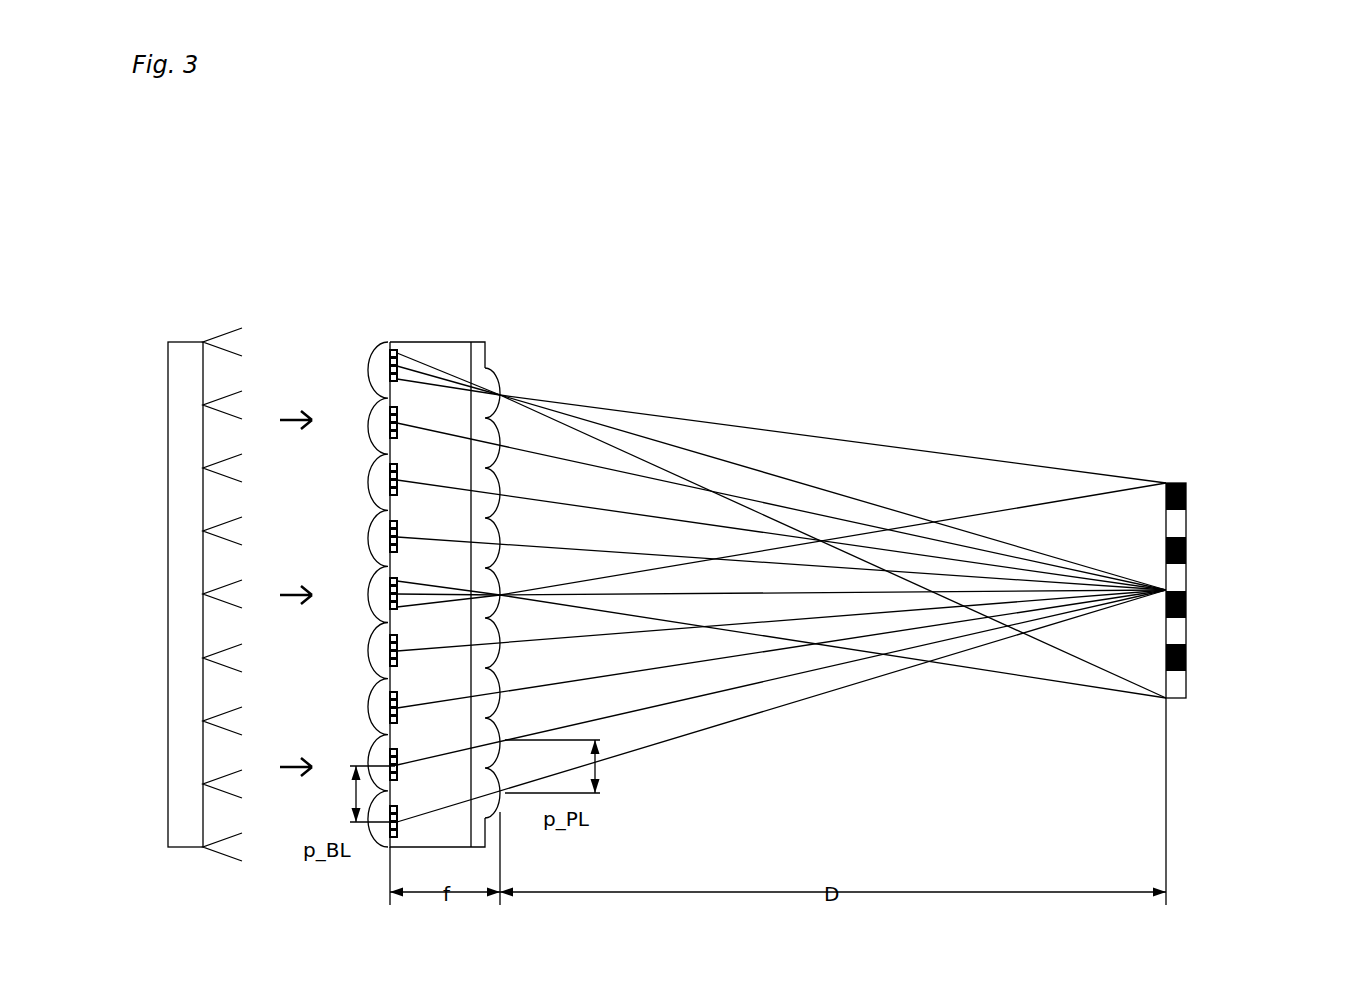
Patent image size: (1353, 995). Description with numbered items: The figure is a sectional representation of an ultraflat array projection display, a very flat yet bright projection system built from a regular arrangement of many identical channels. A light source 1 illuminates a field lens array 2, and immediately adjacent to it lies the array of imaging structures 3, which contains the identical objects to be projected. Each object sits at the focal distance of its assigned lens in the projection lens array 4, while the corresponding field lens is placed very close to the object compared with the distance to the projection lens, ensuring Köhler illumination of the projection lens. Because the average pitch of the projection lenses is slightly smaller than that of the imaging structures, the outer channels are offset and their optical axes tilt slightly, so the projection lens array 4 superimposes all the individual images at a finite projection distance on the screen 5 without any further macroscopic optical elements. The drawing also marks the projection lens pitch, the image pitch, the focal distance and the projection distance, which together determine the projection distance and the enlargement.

The light source 1 is at (170, 342).
The field lens array 2 is at (364, 358).
The array of imaging structures 3 is at (398, 352).
The projection lens array 4 is at (492, 378).
The screen 5 is at (1190, 484).